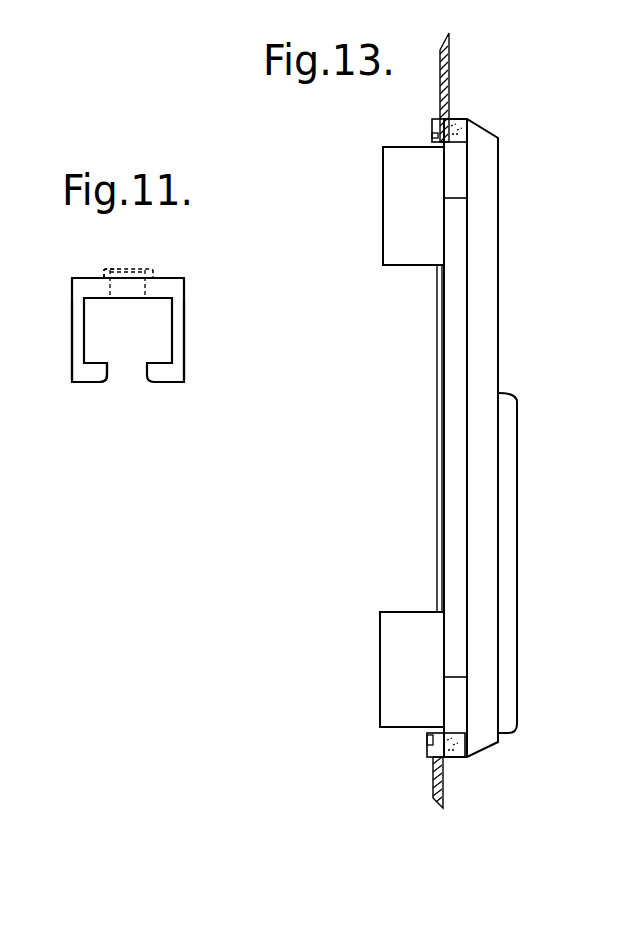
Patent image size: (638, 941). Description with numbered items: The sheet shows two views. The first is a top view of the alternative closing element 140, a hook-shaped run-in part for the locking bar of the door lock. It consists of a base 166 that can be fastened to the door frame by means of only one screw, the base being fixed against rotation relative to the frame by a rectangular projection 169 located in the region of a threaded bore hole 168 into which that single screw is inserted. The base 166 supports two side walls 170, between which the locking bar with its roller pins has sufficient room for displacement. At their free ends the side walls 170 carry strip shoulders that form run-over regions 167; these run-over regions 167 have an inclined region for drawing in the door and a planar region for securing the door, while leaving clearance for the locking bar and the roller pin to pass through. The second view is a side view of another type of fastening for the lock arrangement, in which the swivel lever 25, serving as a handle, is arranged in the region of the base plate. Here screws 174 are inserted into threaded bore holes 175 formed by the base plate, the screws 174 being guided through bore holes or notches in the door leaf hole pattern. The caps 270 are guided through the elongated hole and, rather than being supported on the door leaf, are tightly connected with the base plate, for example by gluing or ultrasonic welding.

In FIG. 11, the closing element 140 is at (232, 298).
In FIG. 11, the base 166 is at (92, 292).
In FIG. 11, the run-over regions 167 is at (95, 373).
In FIG. 11, the threaded bore hole 168 is at (128, 268).
In FIG. 11, the rectangular projection 169 is at (103, 268).
In FIG. 11, the side walls 170 is at (82, 353).
In FIG. 13, the swivel lever 25 is at (505, 500).
In FIG. 13, the caps 270 is at (390, 690).
In FIG. 13, the screws 174 is at (427, 755).
In FIG. 13, the threaded bore holes 175 is at (460, 758).